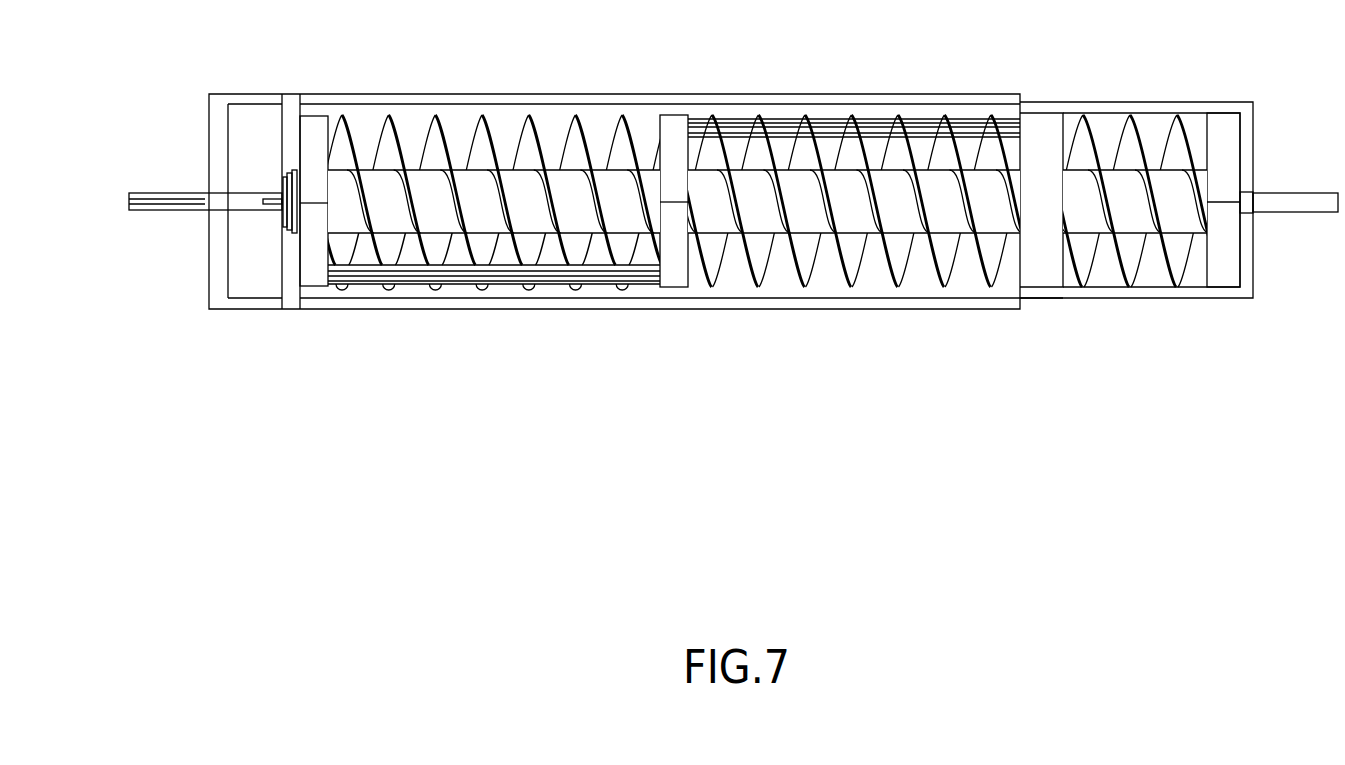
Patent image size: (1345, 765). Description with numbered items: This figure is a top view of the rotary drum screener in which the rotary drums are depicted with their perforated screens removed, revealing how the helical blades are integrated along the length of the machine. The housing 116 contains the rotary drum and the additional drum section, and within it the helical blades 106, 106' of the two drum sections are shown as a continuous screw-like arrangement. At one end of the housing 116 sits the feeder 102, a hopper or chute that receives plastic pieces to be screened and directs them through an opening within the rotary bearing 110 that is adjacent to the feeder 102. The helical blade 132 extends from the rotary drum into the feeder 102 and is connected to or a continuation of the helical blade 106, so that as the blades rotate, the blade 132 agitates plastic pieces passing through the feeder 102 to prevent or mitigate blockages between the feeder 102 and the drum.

The feeder 102 is at (1140, 102).
The helical blade 106 is at (852, 165).
The helical blade 106' is at (482, 166).
The rotary bearing 110 is at (1040, 290).
The housing 116 is at (553, 94).
The helical blade 132 is at (1158, 286).